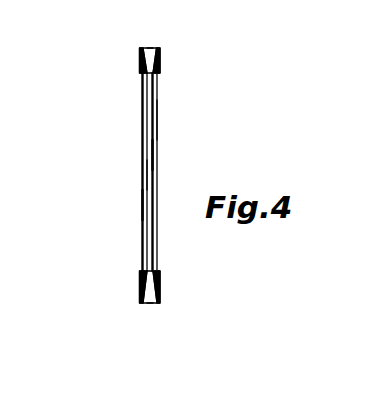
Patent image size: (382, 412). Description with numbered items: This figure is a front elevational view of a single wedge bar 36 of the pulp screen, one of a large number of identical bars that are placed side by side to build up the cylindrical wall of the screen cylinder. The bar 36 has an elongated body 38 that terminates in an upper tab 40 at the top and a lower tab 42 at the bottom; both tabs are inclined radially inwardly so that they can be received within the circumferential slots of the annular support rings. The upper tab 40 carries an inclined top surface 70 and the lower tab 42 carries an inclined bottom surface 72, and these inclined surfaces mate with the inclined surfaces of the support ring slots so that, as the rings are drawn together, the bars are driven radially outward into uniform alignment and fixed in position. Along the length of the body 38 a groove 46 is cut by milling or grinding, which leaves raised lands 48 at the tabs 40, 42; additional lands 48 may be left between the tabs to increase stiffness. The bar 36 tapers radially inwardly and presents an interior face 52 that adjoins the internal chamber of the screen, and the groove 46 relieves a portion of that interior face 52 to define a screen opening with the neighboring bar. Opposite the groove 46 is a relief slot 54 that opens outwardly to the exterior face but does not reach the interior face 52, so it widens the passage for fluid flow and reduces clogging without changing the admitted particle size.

The wedge bar 36 is at (102, 107).
The elongated body 38 is at (157, 157).
The upper tab 40 is at (160, 66).
The lower tab 42 is at (140, 291).
The groove 46 is at (157, 177).
The raised land 48 is at (160, 77).
The interior face 52 is at (157, 133).
The relief slot 54 is at (142, 206).
The inclined top surface 70 is at (151, 47).
The inclined bottom surface 72 is at (152, 296).